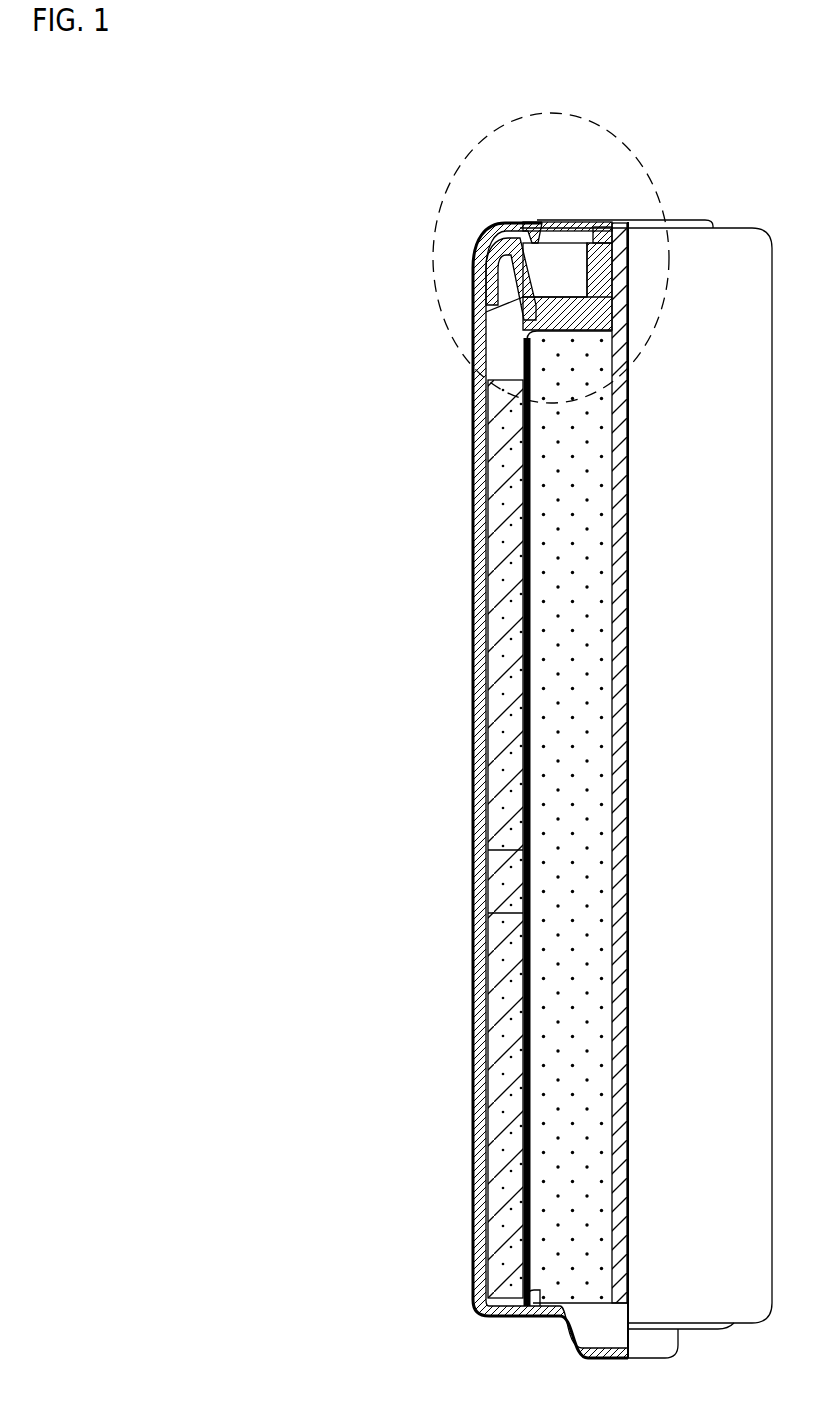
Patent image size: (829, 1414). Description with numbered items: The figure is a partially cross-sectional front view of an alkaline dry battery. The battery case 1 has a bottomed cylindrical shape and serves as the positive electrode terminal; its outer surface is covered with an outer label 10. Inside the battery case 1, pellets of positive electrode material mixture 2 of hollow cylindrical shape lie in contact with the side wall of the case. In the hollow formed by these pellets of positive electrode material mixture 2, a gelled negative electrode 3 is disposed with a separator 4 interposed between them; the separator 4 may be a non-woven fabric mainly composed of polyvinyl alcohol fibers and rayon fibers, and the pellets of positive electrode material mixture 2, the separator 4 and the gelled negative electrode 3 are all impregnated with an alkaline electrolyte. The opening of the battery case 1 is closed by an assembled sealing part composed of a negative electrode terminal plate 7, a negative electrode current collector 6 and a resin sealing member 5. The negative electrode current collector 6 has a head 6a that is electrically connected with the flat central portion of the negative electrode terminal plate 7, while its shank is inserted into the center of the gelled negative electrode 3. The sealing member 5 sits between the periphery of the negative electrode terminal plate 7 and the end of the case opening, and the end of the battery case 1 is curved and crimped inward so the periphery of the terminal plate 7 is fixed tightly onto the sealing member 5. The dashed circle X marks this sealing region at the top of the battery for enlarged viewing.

The battery case 1 is at (477, 815).
The pellets of positive electrode material mixture 2 is at (480, 1127).
The gelled negative electrode 3 is at (548, 678).
The separator 4 is at (482, 920).
The resin sealing member 5 is at (607, 330).
The negative electrode current collector 6 is at (613, 478).
The head 6a is at (603, 226).
The negative electrode terminal plate 7 is at (568, 221).
The outer label 10 is at (470, 285).
The detail region X is at (455, 161).